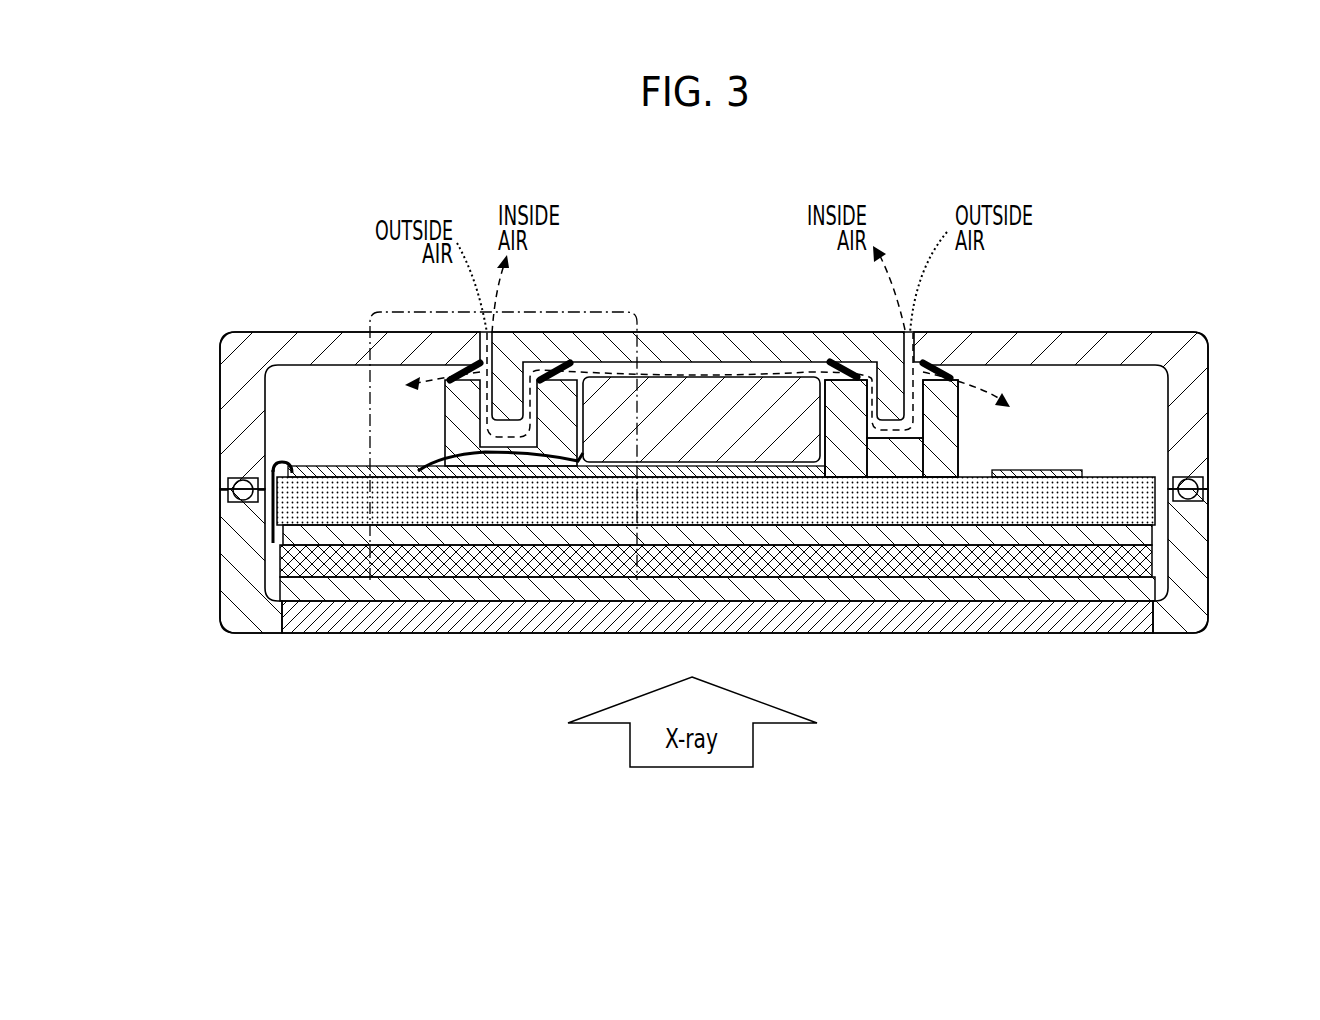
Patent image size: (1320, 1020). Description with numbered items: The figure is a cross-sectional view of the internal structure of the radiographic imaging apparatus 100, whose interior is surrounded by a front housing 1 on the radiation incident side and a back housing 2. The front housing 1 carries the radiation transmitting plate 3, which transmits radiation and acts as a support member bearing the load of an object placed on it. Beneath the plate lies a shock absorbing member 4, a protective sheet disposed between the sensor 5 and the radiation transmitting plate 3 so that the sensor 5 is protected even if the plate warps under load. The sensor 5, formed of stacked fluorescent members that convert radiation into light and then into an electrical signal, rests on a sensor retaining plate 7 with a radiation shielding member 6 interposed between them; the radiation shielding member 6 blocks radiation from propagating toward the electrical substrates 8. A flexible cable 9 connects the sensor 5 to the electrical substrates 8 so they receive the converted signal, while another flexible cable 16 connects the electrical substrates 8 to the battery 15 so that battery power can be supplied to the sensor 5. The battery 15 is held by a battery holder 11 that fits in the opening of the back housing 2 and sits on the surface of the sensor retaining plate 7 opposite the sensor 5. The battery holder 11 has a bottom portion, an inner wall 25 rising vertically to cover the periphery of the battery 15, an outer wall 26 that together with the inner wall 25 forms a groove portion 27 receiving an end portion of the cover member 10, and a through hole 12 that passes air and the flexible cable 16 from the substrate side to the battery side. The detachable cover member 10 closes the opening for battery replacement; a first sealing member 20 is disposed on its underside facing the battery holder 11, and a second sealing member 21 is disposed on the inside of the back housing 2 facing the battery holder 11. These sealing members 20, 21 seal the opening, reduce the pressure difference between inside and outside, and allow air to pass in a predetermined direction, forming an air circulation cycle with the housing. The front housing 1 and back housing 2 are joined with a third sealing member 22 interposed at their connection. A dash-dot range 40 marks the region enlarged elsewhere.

The radiographic imaging apparatus 100 is at (1052, 160).
The front housing 1 is at (240, 625).
The back housing 2 is at (1077, 365).
The radiation transmitting plate 3 is at (1130, 635).
The shock absorbing member 4 is at (1150, 588).
The sensor 5 is at (290, 562).
The radiation shielding member 6 is at (1143, 535).
The sensor retaining plate 7 is at (1112, 487).
The electrical substrates 8 is at (290, 465).
The flexible cable 9 is at (277, 458).
The cover member 10 is at (740, 345).
The battery holder 11 is at (947, 450).
The through hole 12 is at (443, 458).
The battery 15 is at (669, 388).
The flexible cable 16 is at (462, 472).
The sealing member 20 is at (567, 335).
The sealing member 21 is at (447, 335).
The sealing member 22 is at (235, 480).
The inner wall 25 is at (847, 407).
The outer wall 26 is at (943, 412).
The groove portion 27 is at (902, 452).
The range 40 is at (537, 310).